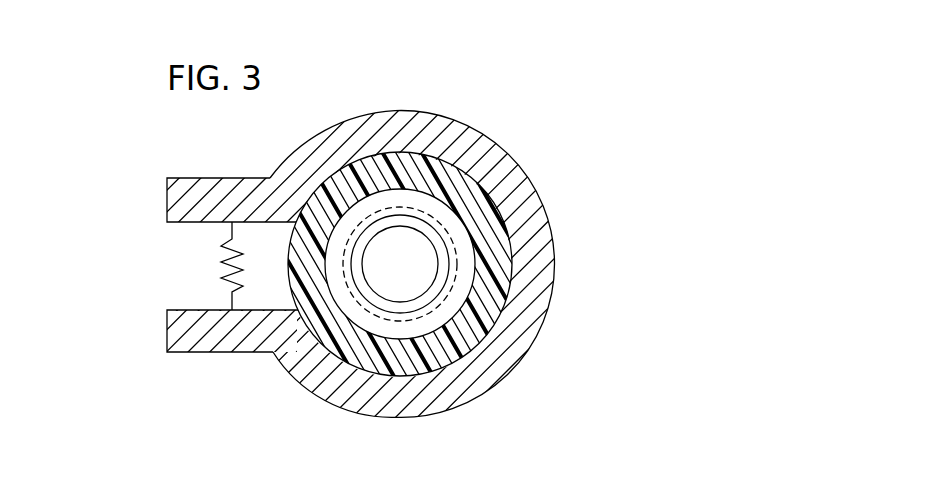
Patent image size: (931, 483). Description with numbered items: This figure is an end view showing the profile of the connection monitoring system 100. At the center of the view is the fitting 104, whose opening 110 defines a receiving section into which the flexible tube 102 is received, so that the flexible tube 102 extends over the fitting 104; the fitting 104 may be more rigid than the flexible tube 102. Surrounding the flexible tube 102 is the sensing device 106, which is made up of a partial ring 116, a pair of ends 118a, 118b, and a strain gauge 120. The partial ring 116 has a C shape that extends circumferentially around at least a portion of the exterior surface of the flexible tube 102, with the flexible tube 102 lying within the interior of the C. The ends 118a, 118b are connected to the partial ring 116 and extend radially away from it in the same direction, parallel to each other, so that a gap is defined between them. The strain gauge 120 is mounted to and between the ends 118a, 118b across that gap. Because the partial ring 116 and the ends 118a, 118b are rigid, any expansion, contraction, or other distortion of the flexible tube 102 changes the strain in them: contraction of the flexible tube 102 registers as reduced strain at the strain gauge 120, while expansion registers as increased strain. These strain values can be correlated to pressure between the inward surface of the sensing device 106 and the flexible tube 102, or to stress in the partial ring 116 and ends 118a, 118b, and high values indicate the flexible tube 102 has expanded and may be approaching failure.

The connection monitoring system 100 is at (552, 105).
The flexible tube 102 is at (473, 197).
The fitting 104 is at (457, 297).
The sensing device 106 is at (546, 223).
The opening 110 is at (430, 265).
The partial ring 116 is at (521, 325).
The end 118a is at (167, 200).
The end 118b is at (167, 333).
The strain gauge 120 is at (228, 260).